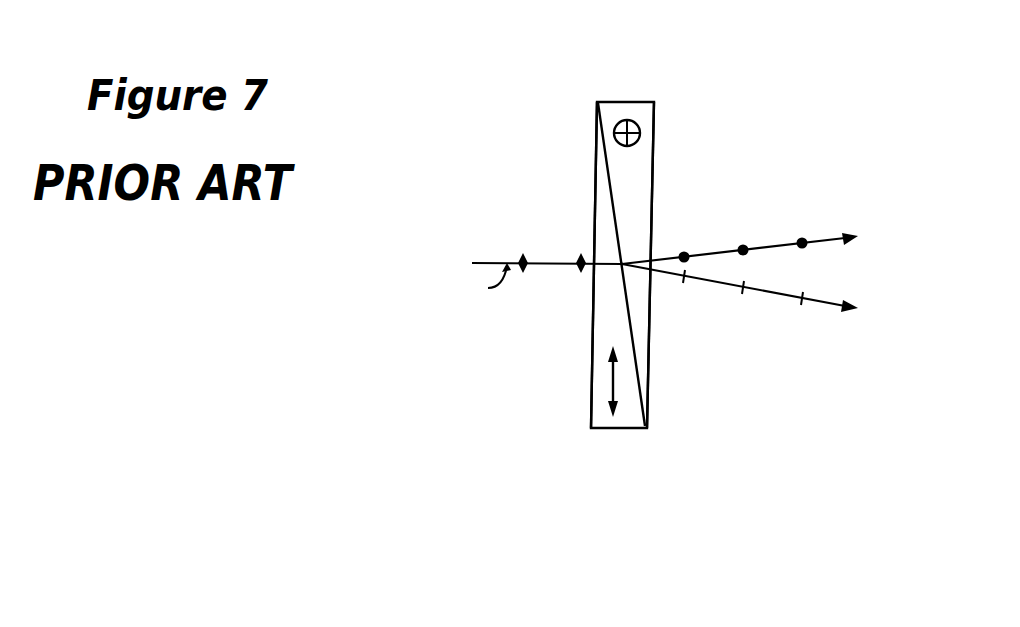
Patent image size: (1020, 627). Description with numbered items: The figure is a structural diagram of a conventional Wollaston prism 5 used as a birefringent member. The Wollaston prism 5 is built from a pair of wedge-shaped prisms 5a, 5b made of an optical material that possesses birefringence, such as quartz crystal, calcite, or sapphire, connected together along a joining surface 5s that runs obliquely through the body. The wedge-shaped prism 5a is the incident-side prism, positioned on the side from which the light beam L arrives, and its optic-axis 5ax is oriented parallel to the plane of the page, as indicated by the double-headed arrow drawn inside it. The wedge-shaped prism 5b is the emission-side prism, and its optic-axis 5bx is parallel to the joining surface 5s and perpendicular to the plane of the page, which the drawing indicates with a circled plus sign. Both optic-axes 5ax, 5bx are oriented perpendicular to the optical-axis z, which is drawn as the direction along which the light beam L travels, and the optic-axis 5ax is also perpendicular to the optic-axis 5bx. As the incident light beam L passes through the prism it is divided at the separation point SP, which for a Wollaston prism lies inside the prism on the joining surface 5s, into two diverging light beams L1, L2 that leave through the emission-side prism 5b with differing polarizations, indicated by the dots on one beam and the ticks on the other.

The first Wollaston prism 5 is at (582, 81).
The joining surface 5s is at (620, 223).
The optic-axis of wedge-shaped prism 5b 5bx is at (637, 123).
The wedge-shaped prism 5b is at (640, 173).
The wedge-shaped prism 5a is at (603, 338).
The optic-axis of wedge-shaped prism 5a 5ax is at (603, 382).
The incident light beam L is at (547, 248).
The optical-axis z is at (491, 281).
The first separated light beam L1 is at (760, 241).
The second separated light beam L2 is at (760, 294).
The separation point SP is at (624, 268).